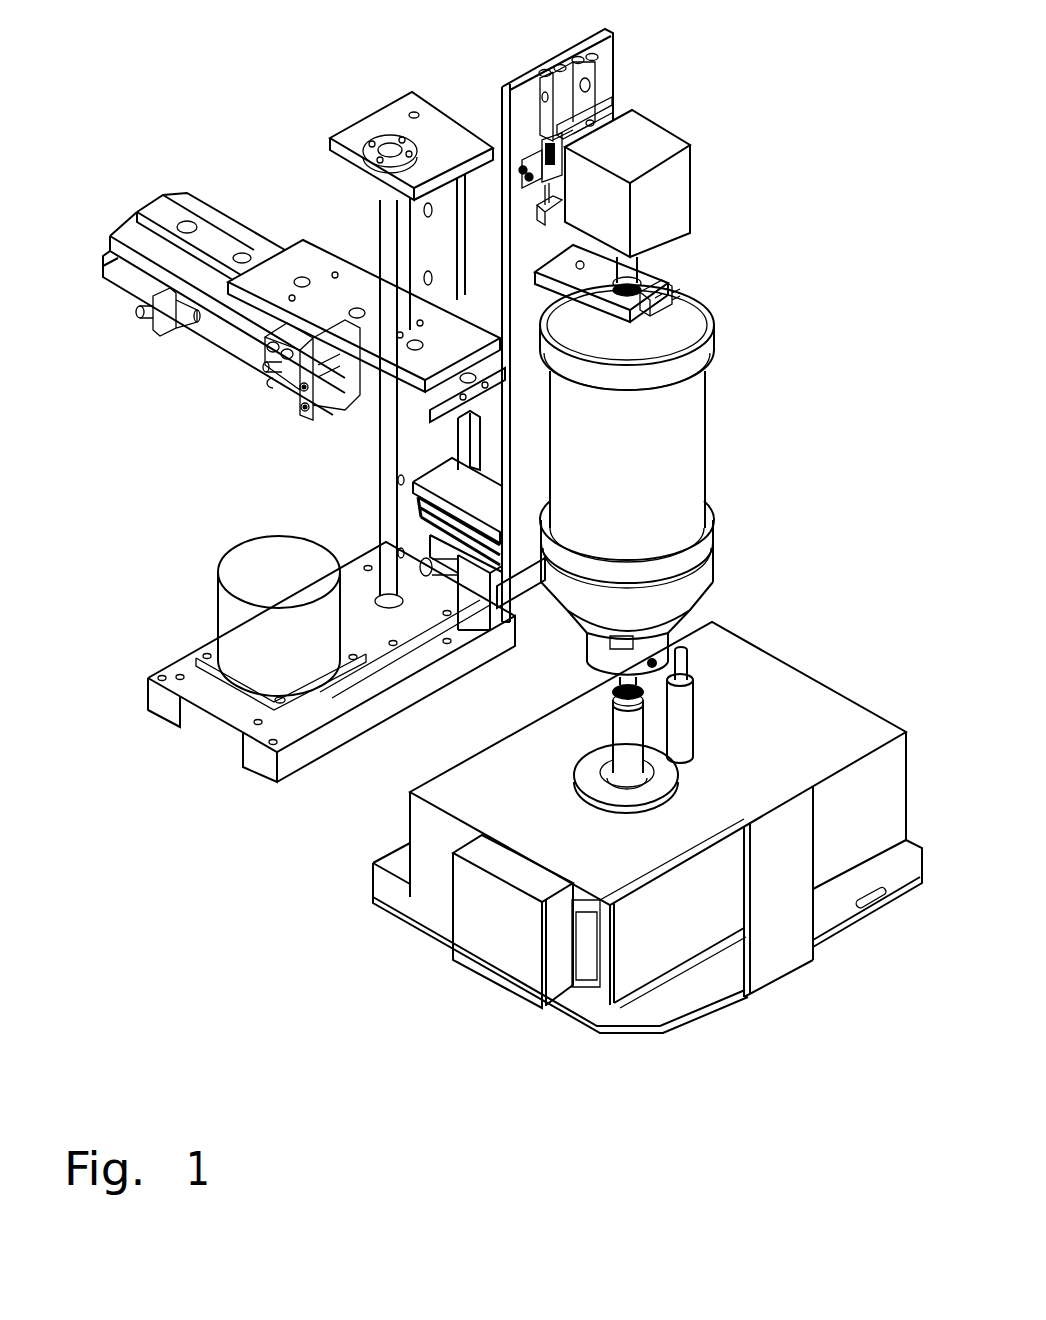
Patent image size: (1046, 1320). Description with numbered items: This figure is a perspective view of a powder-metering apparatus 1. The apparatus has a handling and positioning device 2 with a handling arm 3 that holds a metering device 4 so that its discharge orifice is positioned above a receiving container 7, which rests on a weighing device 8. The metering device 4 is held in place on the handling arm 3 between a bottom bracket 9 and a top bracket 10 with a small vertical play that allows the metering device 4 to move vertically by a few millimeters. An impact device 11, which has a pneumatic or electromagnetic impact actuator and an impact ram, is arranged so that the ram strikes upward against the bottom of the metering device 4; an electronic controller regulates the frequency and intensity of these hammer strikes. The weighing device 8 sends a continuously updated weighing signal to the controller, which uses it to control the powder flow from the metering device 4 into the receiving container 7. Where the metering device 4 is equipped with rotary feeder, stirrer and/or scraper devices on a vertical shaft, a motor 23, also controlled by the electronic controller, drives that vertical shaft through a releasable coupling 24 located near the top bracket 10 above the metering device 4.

The powder-metering apparatus 1 is at (843, 101).
The handling and positioning device 2 is at (228, 373).
The handling arm 3 is at (325, 297).
The metering device 4 is at (727, 490).
The receiving container 7 is at (623, 740).
The weighing device 8 is at (745, 668).
The bottom bracket 9 is at (595, 635).
The top bracket 10 is at (650, 280).
The impact device 11 is at (712, 711).
The motor 23 is at (667, 193).
The releasable coupling 24 is at (643, 303).